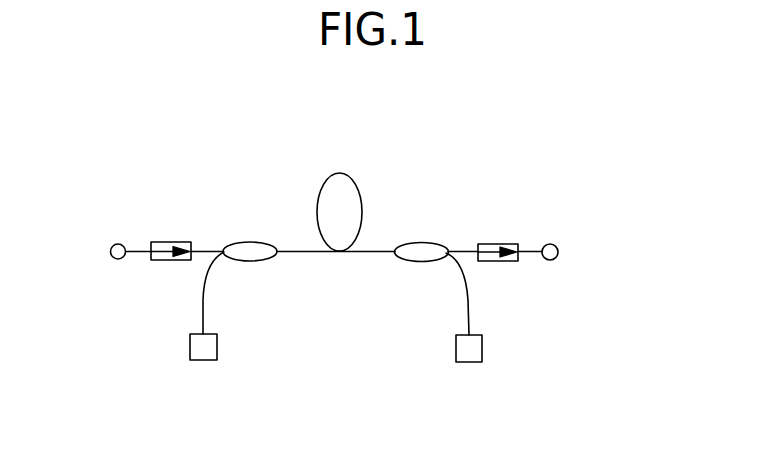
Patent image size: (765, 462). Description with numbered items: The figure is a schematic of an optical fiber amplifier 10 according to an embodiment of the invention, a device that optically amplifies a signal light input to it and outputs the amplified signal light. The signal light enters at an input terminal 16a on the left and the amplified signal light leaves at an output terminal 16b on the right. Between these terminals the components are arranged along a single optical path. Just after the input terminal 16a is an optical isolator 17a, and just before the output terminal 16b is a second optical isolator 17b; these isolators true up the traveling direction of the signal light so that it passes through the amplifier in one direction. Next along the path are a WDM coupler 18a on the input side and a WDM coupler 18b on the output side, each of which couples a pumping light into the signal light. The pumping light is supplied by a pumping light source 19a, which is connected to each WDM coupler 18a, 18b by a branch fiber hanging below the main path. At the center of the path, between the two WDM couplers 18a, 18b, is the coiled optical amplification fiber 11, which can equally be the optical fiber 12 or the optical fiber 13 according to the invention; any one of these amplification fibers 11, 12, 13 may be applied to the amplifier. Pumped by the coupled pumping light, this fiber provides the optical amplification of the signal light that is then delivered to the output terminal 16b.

The optical fiber amplifier 10 is at (569, 135).
The optical amplification fiber 11 is at (338, 172).
The optical amplification fiber 12 is at (339, 212).
The optical amplification fiber 13 is at (339, 212).
The input terminal 16a is at (118, 243).
The output terminal 16b is at (550, 244).
The optical isolator 17a is at (183, 242).
The optical isolator 17b is at (493, 243).
The WDM coupler 18a is at (249, 242).
The WDM coupler 18b is at (423, 243).
The pumping light source 19a is at (200, 360).